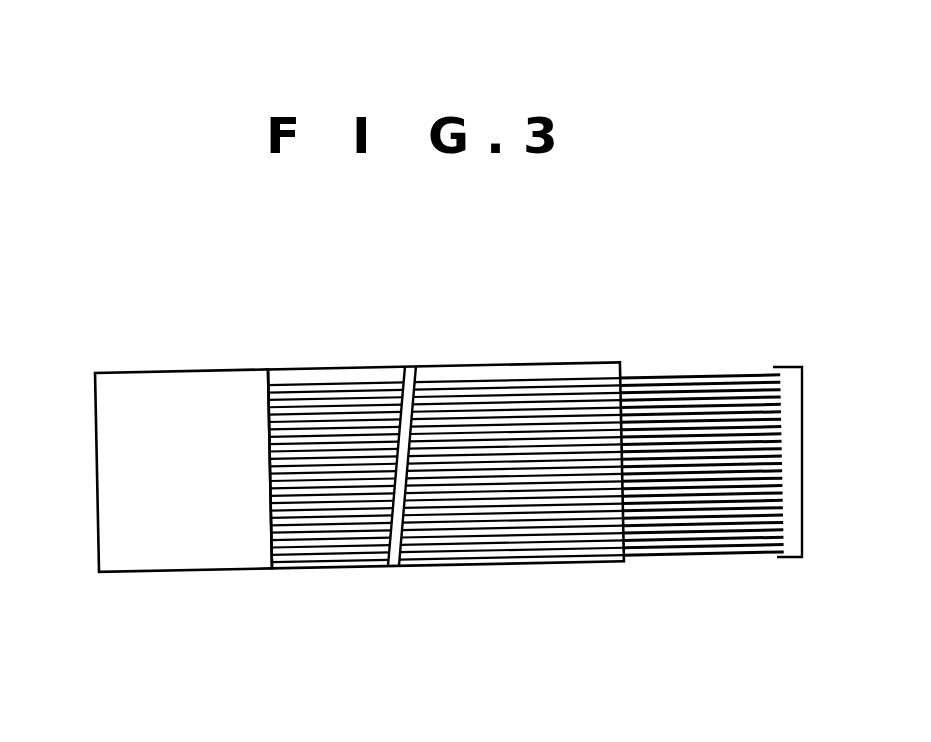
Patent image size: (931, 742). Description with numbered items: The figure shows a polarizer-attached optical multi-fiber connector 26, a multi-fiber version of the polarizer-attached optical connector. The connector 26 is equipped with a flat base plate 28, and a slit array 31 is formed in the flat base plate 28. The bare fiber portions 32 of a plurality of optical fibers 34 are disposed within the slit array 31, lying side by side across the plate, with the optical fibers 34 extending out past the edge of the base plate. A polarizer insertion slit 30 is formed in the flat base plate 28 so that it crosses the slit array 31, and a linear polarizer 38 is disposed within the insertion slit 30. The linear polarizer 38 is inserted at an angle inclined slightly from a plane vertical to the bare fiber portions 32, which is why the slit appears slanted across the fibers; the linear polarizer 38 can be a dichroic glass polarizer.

The polarizer-attached optical multi-fiber connector 26 is at (93, 417).
The flat base plate 28 is at (347, 373).
The polarizer insertion slit 30 is at (400, 568).
The slit array 31 is at (583, 375).
The bare fiber portions 32 is at (443, 380).
The optical fibers 34 is at (802, 450).
The linear polarizer 38 is at (387, 568).